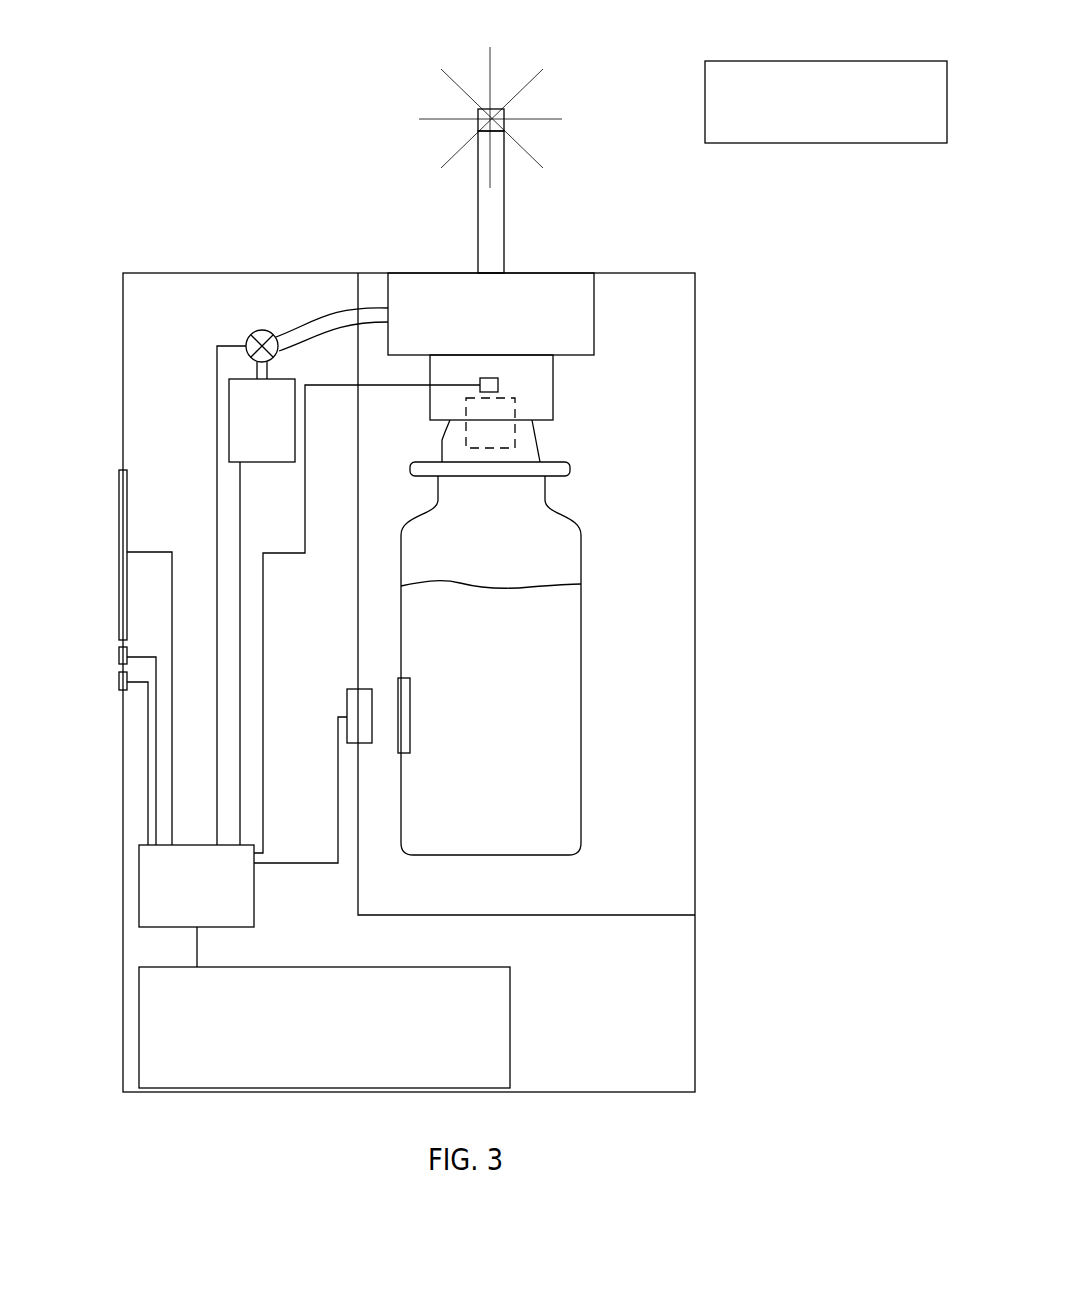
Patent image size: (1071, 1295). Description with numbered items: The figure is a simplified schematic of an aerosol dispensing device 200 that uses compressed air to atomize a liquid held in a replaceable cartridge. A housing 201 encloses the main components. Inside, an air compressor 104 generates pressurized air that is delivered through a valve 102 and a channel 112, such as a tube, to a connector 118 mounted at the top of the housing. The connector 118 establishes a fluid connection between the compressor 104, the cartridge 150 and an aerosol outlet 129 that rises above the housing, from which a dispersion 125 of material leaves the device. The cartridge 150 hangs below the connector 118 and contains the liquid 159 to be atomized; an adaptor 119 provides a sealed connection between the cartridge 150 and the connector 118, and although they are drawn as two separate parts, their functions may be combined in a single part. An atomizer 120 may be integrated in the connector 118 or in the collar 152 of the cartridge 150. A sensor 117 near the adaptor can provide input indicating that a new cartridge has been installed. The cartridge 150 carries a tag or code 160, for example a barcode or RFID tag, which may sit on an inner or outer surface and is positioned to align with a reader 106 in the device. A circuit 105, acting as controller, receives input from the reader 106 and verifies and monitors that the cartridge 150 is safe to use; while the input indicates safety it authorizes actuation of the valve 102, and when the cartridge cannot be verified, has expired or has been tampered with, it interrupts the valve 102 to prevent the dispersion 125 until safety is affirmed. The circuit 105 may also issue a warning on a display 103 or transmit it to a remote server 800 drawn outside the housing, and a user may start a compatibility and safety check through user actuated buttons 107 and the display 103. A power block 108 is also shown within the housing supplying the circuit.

The aerosol dispensing device 200 is at (223, 170).
The housing 201 is at (123, 382).
The remote server 800 is at (757, 60).
The dispersion 125 is at (545, 98).
The aerosol outlet 129 is at (492, 207).
The connector 118 is at (594, 328).
The adaptor 119 is at (553, 392).
The sensor 117 is at (482, 378).
The atomizer 120 is at (513, 435).
The collar 152 is at (540, 438).
The cartridge 150 is at (491, 658).
The liquid 159 is at (491, 636).
The tag or code 160 is at (410, 738).
The channel 112 is at (347, 308).
The valve 102 is at (247, 340).
The air compressor 104 is at (229, 420).
The display 103 is at (119, 545).
The user actuated buttons 107 is at (119, 690).
The reader 106 is at (347, 697).
The circuit 105 is at (254, 900).
The power supply 108 is at (510, 997).